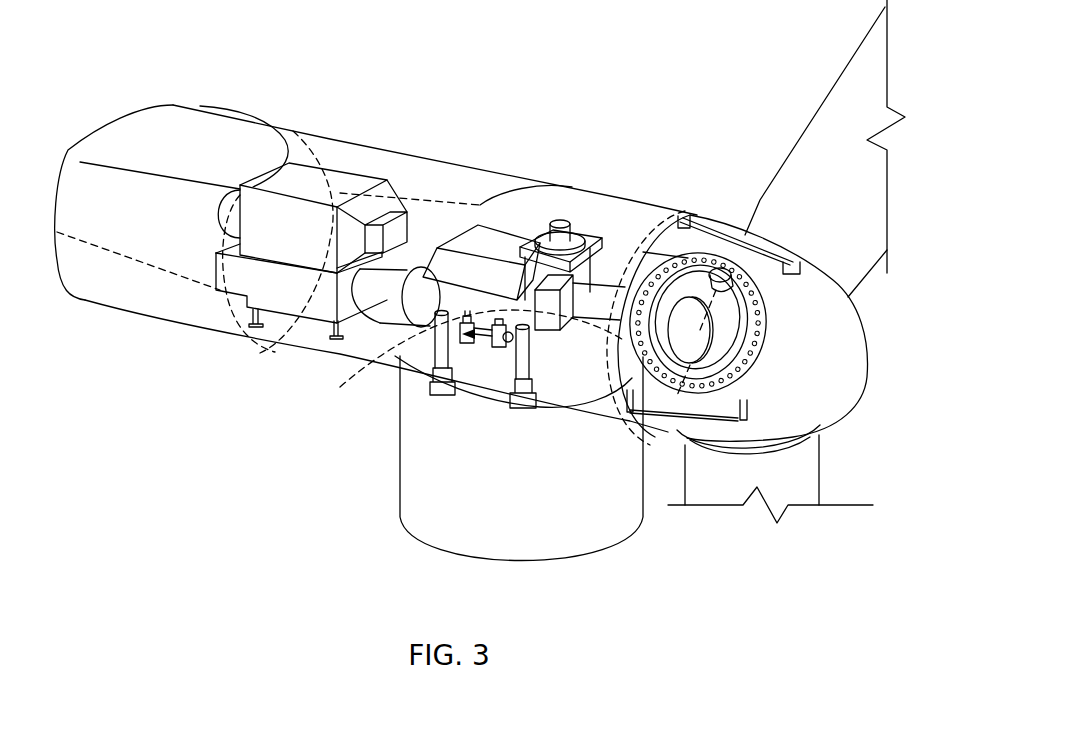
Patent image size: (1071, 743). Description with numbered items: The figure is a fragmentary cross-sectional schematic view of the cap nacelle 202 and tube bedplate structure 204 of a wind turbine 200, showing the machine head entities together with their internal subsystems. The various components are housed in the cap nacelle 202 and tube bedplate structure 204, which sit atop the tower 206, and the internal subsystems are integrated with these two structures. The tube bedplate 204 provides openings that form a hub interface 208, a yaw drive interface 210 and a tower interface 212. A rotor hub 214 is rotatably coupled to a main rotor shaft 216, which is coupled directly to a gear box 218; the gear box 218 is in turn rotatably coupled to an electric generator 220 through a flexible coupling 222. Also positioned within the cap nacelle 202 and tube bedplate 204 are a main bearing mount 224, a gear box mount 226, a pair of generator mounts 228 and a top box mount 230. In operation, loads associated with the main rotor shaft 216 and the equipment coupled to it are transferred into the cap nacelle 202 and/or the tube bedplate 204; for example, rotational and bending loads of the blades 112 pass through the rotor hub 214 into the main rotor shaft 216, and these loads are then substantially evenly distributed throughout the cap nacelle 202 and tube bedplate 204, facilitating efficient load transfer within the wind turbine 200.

The blades 112 is at (793, 170).
The wind turbine 200 is at (184, 456).
The cap nacelle 202 is at (72, 183).
The tube bedplate structure 204 is at (594, 211).
The tower 206 is at (584, 540).
The hub interface 208 is at (628, 345).
The yaw drive interface 210 is at (440, 396).
The tower interface 212 is at (421, 392).
The rotor hub 214 is at (836, 365).
The main rotor shaft 216 is at (595, 305).
The gear box 218 is at (445, 283).
The electric generator 220 is at (353, 184).
The flexible coupling 222 is at (385, 296).
The main bearing mount 224 is at (598, 270).
The gear box mount 226 is at (425, 330).
The generator mounts 228 is at (226, 298).
The top box mount 230 is at (293, 277).